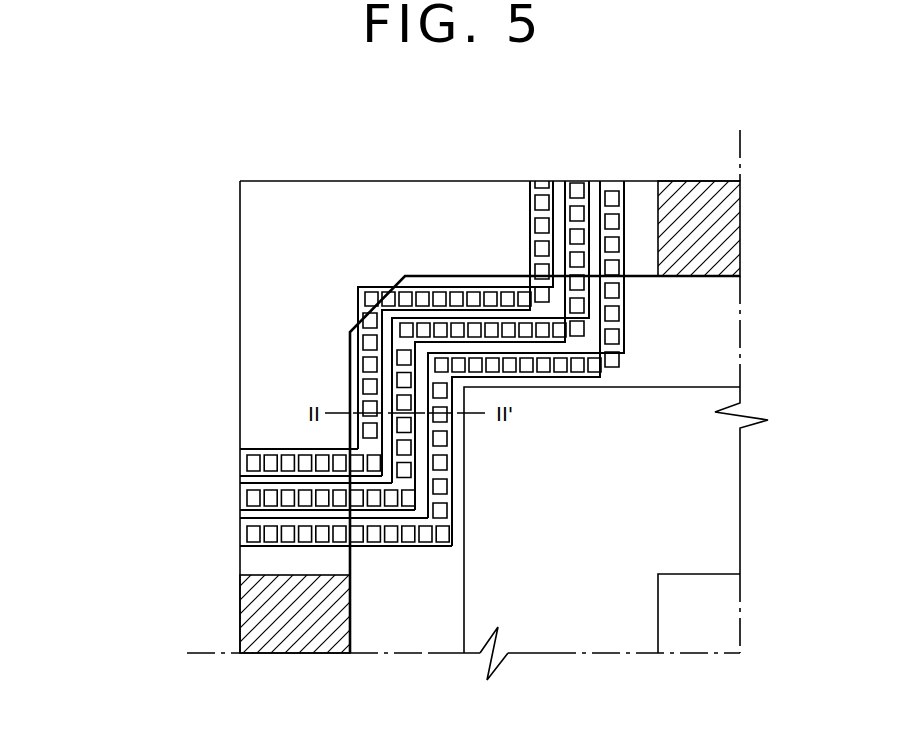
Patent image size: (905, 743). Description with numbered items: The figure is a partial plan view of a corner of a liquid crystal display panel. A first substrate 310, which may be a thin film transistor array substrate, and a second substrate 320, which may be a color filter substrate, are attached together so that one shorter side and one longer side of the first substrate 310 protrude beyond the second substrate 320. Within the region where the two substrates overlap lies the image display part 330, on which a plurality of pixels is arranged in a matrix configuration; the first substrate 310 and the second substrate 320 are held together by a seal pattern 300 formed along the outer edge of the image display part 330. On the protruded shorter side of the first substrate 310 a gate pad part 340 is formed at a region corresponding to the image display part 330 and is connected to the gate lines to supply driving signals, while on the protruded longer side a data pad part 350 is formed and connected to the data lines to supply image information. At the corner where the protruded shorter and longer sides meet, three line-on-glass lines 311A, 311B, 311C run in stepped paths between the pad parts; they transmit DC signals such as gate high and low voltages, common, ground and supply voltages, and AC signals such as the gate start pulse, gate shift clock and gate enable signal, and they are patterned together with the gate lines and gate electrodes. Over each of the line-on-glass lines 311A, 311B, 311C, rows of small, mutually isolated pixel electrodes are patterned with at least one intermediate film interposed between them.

The seal pattern 300 is at (572, 637).
The first substrate 310 is at (246, 268).
The second substrate 320 is at (408, 637).
The image display part 330 is at (714, 627).
The gate pad part 340 is at (262, 640).
The data pad part 350 is at (716, 181).
The line-on-glass line 311A is at (533, 181).
The line-on-glass line 311B is at (577, 181).
The line-on-glass line 311C is at (622, 182).